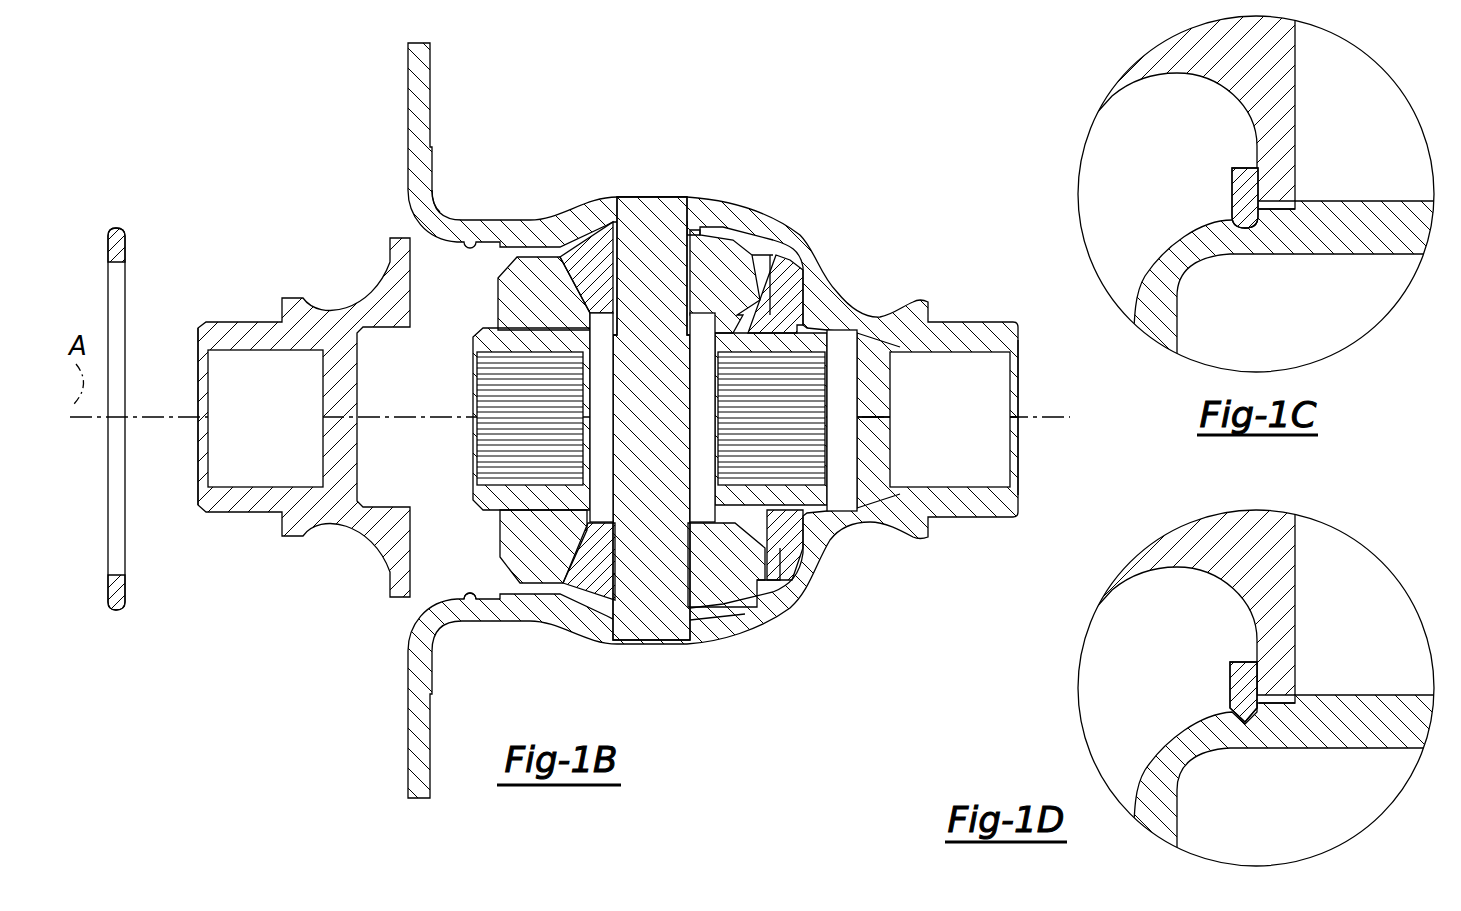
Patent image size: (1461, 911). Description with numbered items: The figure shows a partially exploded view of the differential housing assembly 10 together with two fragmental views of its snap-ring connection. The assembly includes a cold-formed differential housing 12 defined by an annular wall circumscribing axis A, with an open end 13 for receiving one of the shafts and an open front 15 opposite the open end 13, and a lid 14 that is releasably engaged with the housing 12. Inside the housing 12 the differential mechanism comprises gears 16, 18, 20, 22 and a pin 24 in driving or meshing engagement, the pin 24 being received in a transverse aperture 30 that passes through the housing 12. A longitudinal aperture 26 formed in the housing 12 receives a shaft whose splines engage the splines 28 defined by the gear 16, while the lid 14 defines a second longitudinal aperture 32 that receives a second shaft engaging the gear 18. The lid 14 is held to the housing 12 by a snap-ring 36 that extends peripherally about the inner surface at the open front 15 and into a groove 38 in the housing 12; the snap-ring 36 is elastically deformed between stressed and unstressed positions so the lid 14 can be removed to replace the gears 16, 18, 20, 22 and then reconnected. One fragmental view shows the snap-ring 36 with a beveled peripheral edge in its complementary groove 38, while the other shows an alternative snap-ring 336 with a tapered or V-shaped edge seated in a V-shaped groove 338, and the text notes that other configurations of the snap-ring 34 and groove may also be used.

In FIG. 1B, the differential housing assembly 10 is at (314, 196).
In FIG. 1B, the differential housing 12 is at (784, 226).
In FIG. 1C, the differential housing 12 is at (1288, 233).
In FIG. 1D, the differential housing 12 is at (1287, 727).
In FIG. 1B, the open end 13 is at (1024, 376).
In FIG. 1B, the lid 14 is at (376, 541).
In FIG. 1C, the lid 14 is at (1267, 141).
In FIG. 1D, the lid 14 is at (1267, 635).
In FIG. 1B, the open front 15 is at (446, 242).
In FIG. 1B, the gear 16 is at (787, 302).
In FIG. 1B, the gear 18 is at (530, 280).
In FIG. 1B, the gear 20 is at (712, 247).
In FIG. 1B, the gear 22 is at (722, 590).
In FIG. 1B, the pin 24 is at (640, 612).
In FIG. 1B, the longitudinal aperture 26 is at (960, 485).
In FIG. 1B, the splines 28 is at (840, 392).
In FIG. 1B, the transverse aperture 30 is at (700, 636).
In FIG. 1B, the second longitudinal aperture 32 is at (245, 476).
In FIG. 1B, the snap-ring 34 is at (487, 390).
In FIG. 1B, the snap-ring 36 is at (116, 590).
In FIG. 1C, the snap-ring 36 is at (1246, 183).
In FIG. 1B, the groove 38 is at (474, 630).
In FIG. 1C, the groove 38 is at (1272, 224).
In FIG. 1D, the snap-ring 336 is at (1243, 677).
In FIG. 1D, the V-shaped groove 338 is at (1270, 718).